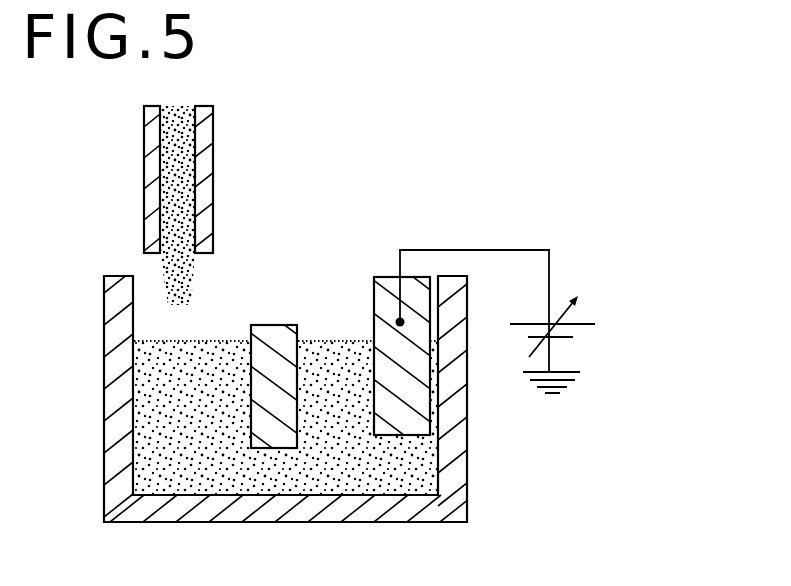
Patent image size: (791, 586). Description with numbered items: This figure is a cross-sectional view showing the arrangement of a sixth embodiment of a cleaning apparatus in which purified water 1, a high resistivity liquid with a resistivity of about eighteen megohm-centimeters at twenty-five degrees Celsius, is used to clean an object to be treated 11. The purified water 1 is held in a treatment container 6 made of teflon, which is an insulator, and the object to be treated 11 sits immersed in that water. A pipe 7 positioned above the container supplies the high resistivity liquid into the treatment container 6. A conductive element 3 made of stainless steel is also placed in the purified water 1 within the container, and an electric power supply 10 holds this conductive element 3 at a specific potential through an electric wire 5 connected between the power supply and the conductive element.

The purified water 1 is at (157, 448).
The conductive element 3 is at (388, 312).
The electric wire 5 is at (551, 273).
The treatment container 6 is at (453, 473).
The pipe 7 is at (229, 129).
The electric power supply 10 is at (592, 333).
The object to be treated 11 is at (272, 337).